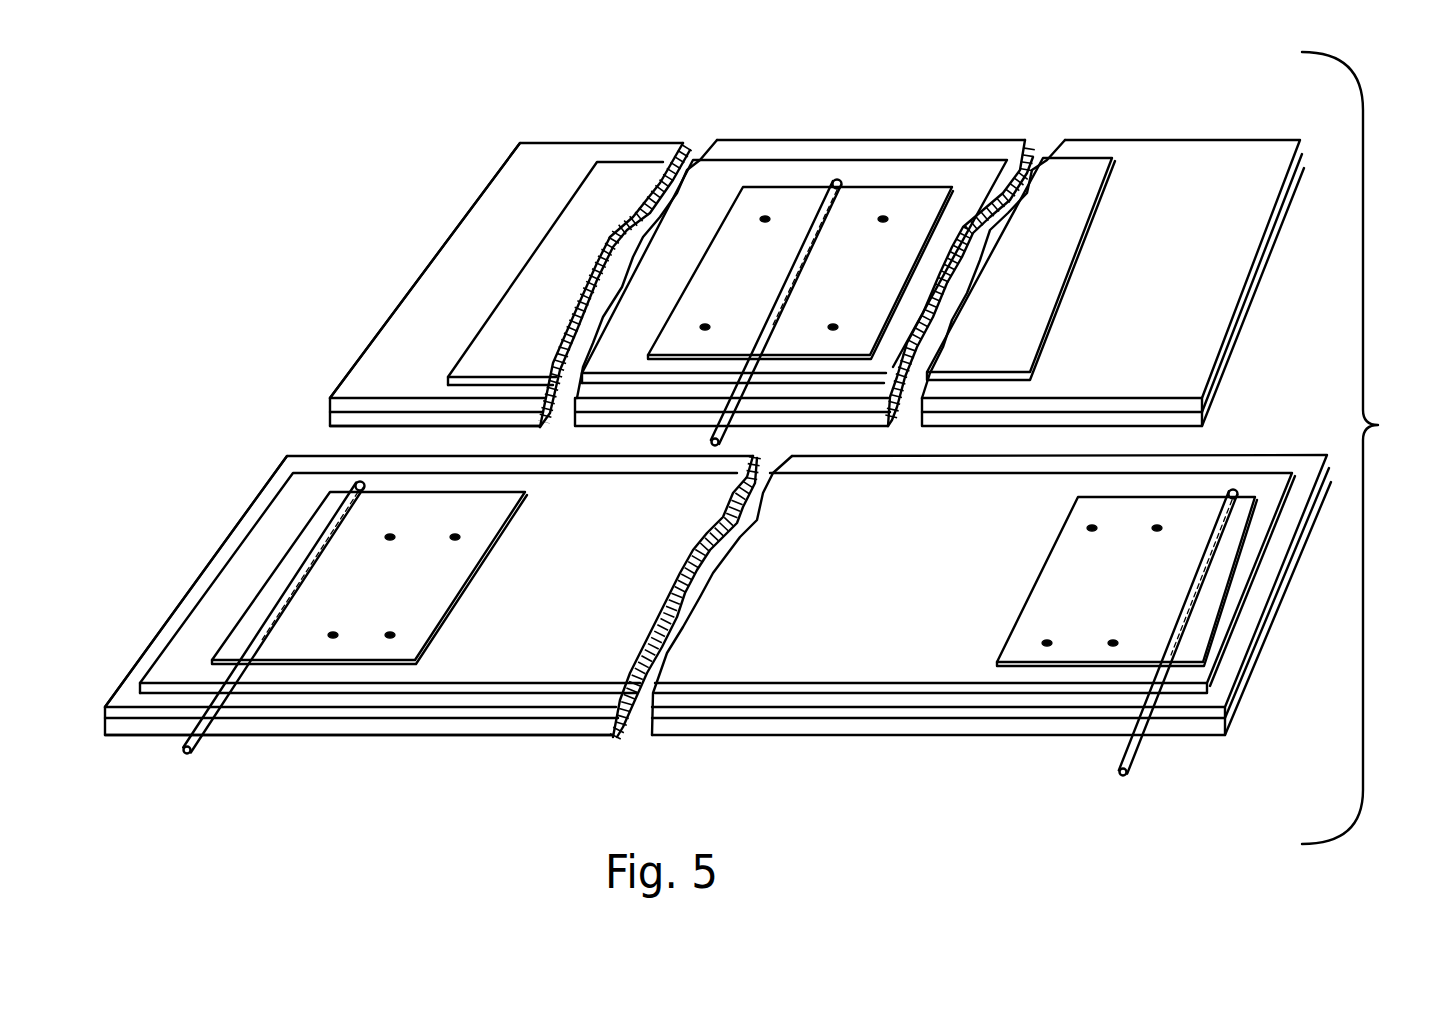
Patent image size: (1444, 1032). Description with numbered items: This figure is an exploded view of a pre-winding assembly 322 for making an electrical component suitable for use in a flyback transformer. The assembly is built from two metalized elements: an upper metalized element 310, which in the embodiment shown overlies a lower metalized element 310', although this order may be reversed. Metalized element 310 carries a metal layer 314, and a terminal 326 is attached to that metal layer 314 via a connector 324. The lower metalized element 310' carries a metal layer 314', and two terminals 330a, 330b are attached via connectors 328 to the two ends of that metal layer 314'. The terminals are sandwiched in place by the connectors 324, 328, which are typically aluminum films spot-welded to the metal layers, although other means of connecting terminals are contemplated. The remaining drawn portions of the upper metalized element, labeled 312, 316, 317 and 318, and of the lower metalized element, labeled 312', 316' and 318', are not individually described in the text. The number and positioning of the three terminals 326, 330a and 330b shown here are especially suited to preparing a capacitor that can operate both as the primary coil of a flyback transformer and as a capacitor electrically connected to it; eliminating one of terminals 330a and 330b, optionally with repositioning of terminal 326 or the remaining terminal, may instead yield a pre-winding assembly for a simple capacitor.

The metalized element 310 is at (506, 283).
The base plate 312 is at (510, 285).
The metal layer 314 is at (555, 273).
The second panel assembly 316 is at (804, 248).
The third panel assembly 317 is at (1143, 223).
The substrate layer 318 is at (383, 400).
The pre-winding assembly 322 is at (1372, 448).
The connector 324 is at (886, 278).
The terminal 326 is at (722, 440).
The metalized element 310' is at (429, 595).
The alternate base plate 312' is at (431, 627).
The metal layer 314' is at (438, 583).
The alternate second panel assembly 316' is at (991, 635).
The alternate substrate layer 318' is at (361, 764).
The connectors 328 is at (412, 596).
The terminal 330a is at (192, 752).
The terminal 330b is at (1137, 753).